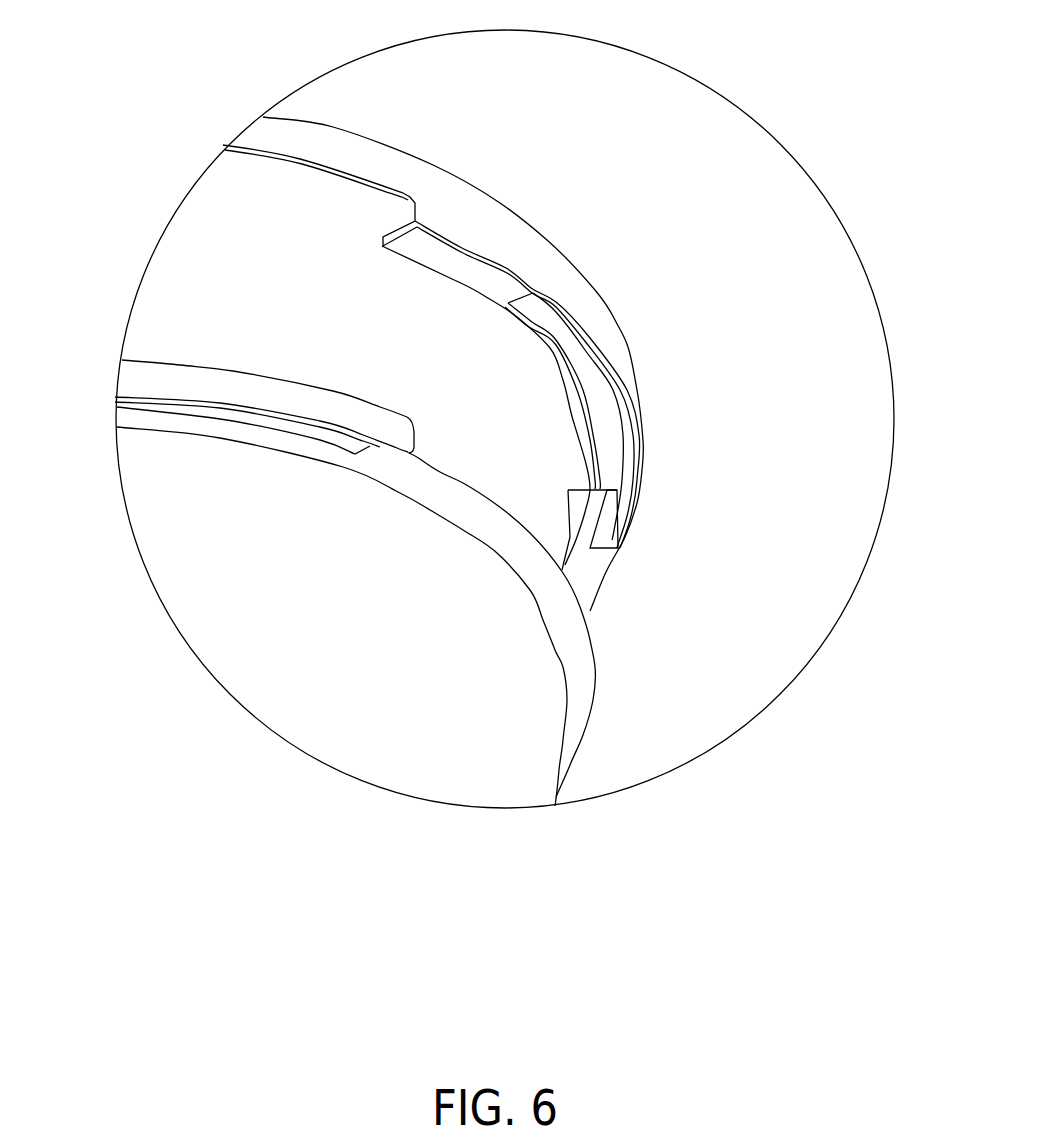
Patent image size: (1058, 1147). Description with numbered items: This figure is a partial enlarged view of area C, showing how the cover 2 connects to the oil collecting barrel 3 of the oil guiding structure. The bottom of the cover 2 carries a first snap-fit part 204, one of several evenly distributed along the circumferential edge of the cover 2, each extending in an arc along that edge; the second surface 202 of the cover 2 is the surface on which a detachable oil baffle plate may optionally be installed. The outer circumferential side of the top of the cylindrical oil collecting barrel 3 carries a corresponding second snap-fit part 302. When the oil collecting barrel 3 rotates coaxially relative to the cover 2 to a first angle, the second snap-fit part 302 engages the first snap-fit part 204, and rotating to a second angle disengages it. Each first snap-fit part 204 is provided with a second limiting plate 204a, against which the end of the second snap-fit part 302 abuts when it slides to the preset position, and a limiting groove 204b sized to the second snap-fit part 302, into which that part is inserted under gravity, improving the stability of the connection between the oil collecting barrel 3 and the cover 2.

The cover 2 is at (258, 130).
The area C is at (778, 138).
The second surface 202 is at (190, 273).
The first snap-fit part 204 is at (458, 247).
The second limiting plate 204a is at (577, 507).
The limiting groove 204b is at (636, 430).
The second snap-fit part 302 is at (275, 407).
The oil collecting barrel 3 is at (328, 684).